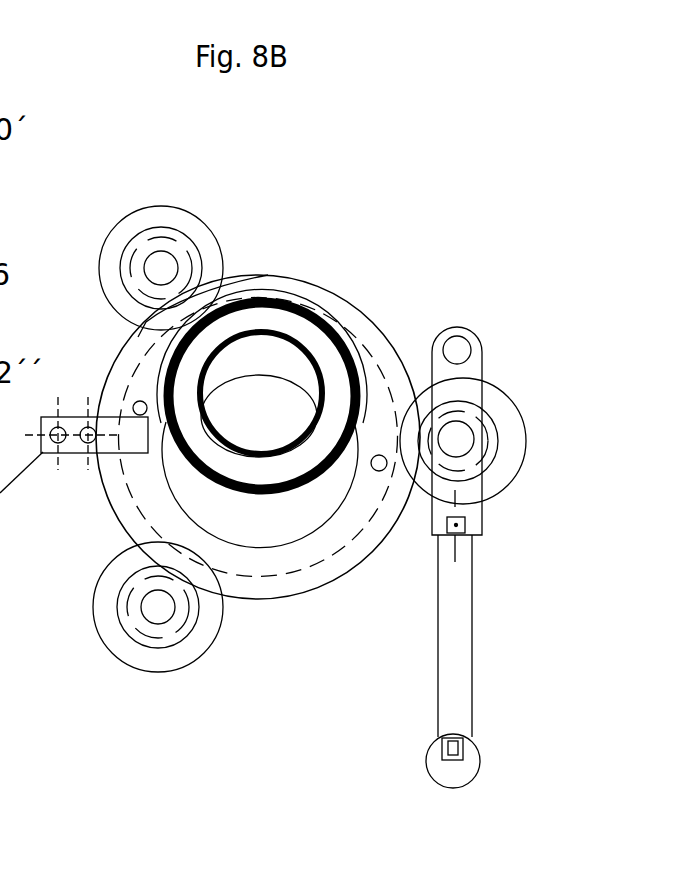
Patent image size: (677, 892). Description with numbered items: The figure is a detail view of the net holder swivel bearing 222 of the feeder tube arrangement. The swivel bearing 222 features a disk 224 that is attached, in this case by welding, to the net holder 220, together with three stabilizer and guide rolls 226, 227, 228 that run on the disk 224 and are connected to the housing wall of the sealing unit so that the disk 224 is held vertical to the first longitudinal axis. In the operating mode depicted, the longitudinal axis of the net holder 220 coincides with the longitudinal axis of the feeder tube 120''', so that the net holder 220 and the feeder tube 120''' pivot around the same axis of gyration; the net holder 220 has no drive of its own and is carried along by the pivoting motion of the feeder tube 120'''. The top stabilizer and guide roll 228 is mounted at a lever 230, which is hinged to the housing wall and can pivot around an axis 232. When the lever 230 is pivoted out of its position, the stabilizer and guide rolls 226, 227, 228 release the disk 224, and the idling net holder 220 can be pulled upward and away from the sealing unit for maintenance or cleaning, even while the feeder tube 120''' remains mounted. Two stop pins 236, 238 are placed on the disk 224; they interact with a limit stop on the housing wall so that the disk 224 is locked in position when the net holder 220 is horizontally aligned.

The net holder swivel bearing 222 is at (444, 149).
The disk 224 is at (363, 312).
The net holder 220 is at (316, 302).
The feeder tube 120''' is at (272, 562).
The stabilizer and guide roll 226 is at (158, 215).
The stabilizer and guide roll 227 is at (147, 673).
The top stabilizer and guide roll 228 is at (526, 462).
The lever 230 is at (472, 667).
The axis 232 is at (463, 348).
The stop pin 236 is at (136, 402).
The stop pin 238 is at (377, 472).